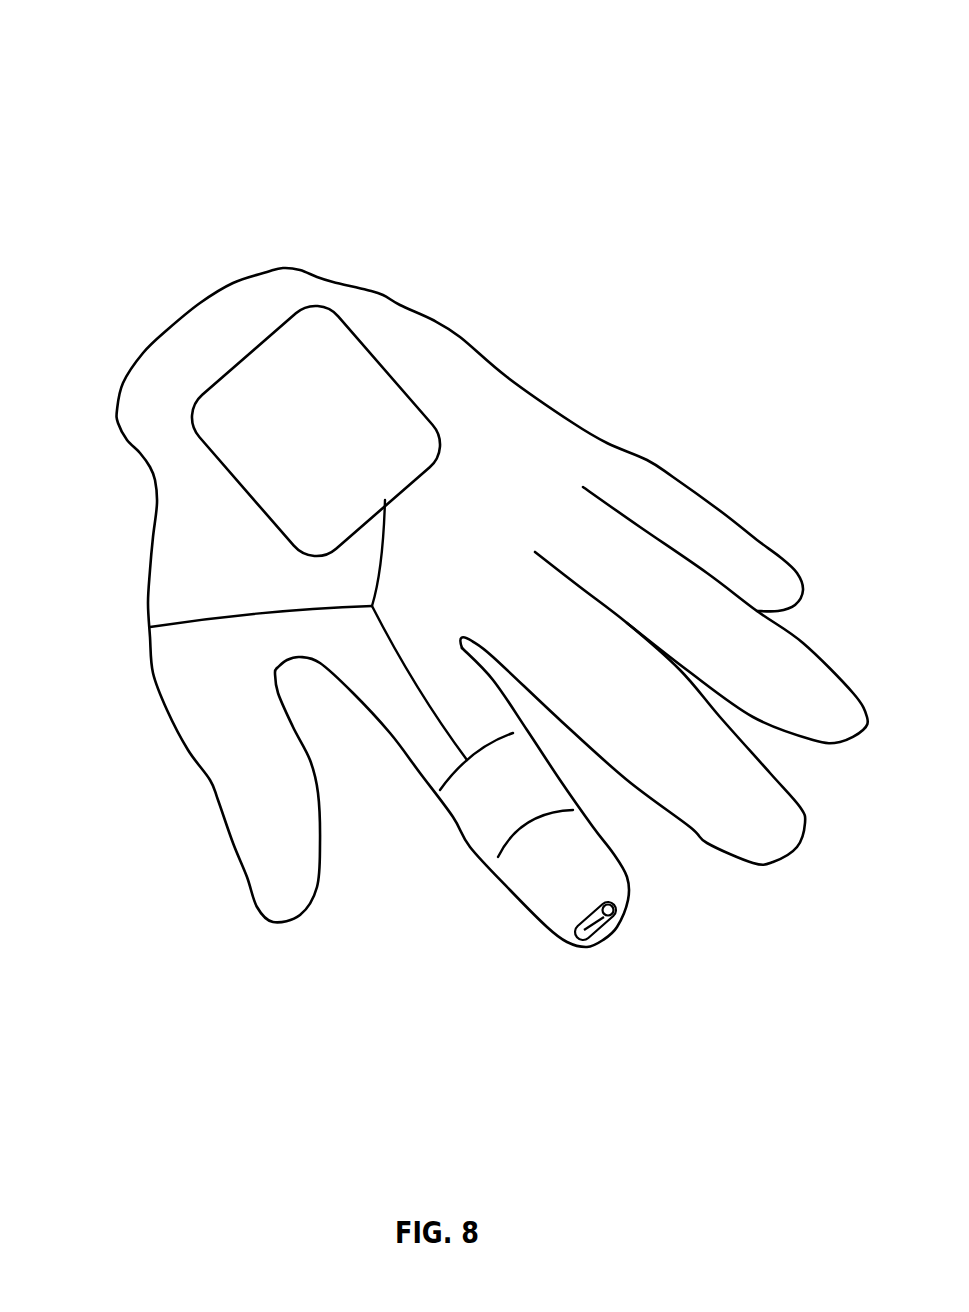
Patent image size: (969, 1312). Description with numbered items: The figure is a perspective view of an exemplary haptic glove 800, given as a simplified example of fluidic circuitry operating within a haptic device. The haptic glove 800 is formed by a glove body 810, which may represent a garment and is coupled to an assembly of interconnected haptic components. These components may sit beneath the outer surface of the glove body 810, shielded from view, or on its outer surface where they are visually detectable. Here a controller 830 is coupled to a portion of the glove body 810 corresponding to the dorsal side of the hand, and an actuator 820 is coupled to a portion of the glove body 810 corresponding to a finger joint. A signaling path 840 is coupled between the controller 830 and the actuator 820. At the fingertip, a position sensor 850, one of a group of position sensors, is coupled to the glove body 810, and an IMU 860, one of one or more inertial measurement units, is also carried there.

The haptic glove 800 is at (145, 62).
The glove body 810 is at (158, 480).
The actuator 820 is at (480, 815).
The controller 830 is at (302, 362).
The signaling path 840 is at (150, 627).
The position sensor 850 is at (617, 910).
The inertial measurement unit 860 is at (597, 940).